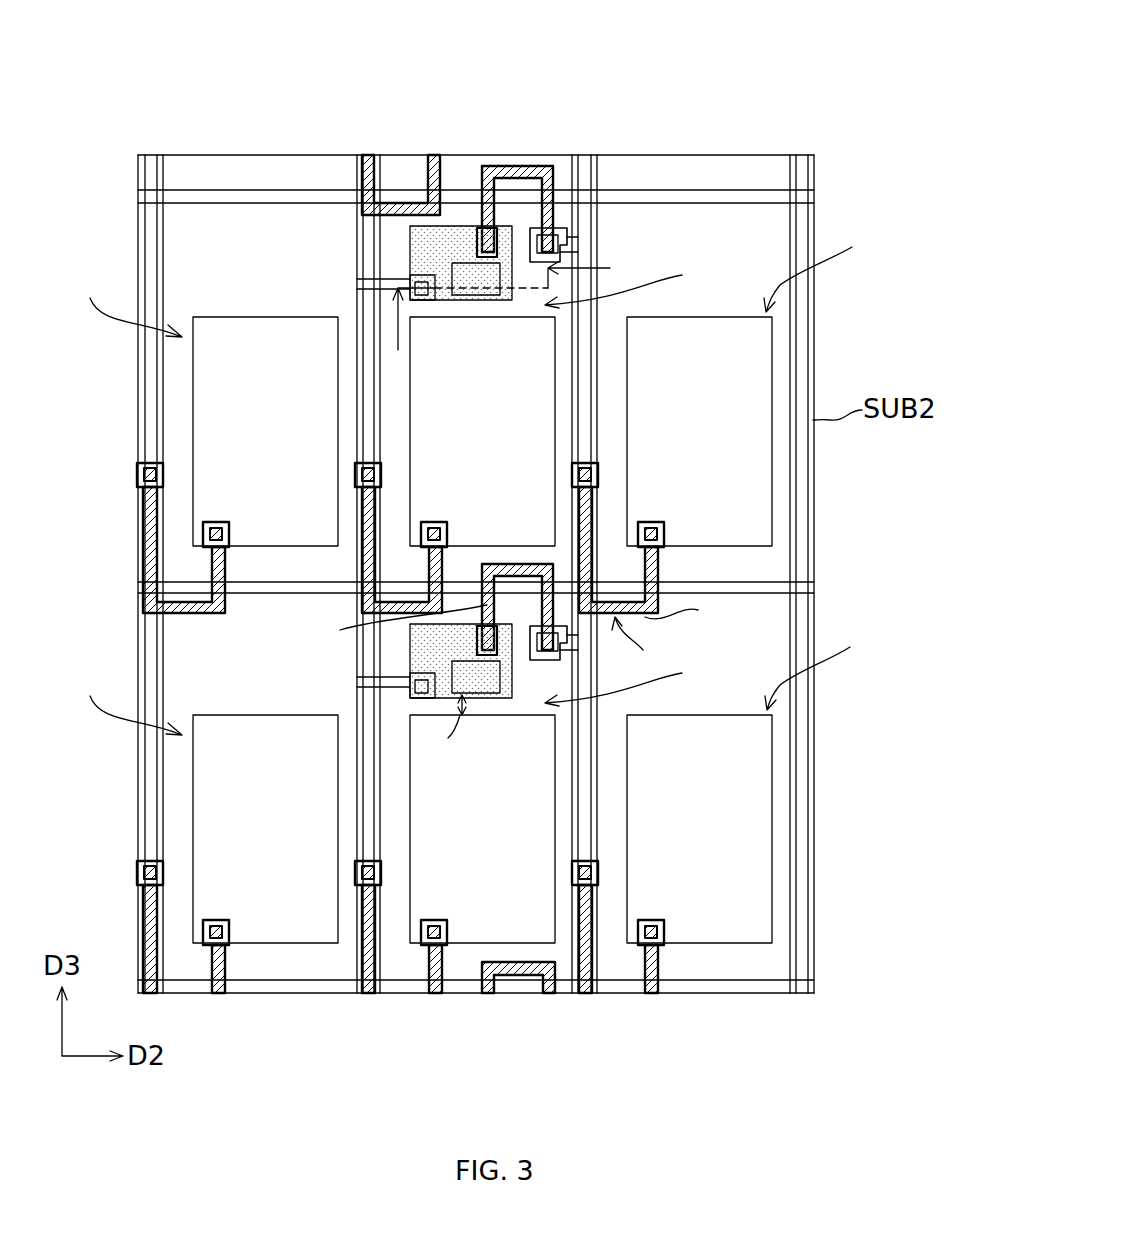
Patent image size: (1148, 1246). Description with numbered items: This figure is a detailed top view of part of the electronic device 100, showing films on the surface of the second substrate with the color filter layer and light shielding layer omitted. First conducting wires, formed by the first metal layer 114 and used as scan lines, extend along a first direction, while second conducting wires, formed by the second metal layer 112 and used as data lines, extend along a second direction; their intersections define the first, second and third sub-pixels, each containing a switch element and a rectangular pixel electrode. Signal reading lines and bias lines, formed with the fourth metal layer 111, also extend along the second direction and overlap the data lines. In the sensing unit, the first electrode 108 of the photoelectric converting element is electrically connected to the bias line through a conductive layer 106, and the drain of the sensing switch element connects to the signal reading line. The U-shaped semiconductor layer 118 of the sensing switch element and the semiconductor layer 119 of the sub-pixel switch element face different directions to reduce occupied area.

The electronic device 100 is at (750, 90).
The fourth metal layer 111 is at (367, 218).
The first electrode 108 is at (455, 226).
The conductive layer 106 is at (400, 288).
The second metal layer 112 is at (812, 333).
The first metal layer 114 is at (810, 590).
The semiconductor layer 118 is at (391, 625).
The semiconductor layer 119 is at (698, 615).